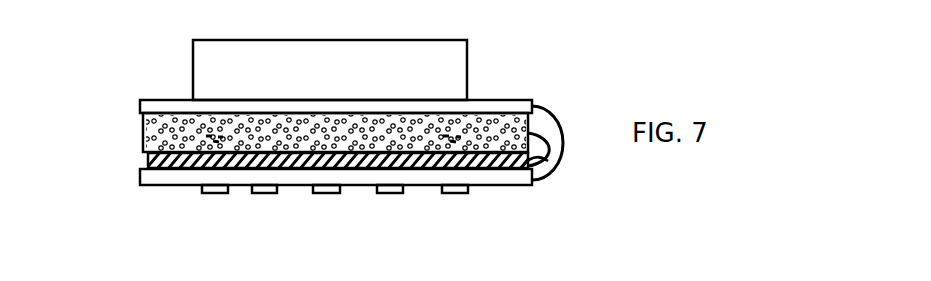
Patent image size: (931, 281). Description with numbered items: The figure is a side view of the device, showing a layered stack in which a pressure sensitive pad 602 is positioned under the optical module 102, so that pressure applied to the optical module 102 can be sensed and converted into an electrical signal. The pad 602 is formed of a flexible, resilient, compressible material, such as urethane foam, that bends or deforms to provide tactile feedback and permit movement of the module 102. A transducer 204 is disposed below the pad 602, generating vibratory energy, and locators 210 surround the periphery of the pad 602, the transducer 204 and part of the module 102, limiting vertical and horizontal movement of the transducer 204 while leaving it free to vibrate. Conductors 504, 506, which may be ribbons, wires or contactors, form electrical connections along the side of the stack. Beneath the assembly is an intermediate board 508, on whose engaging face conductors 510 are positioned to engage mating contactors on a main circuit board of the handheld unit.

The optical module 102 is at (168, 67).
The pressure sensitive pad 602 is at (166, 131).
The locators 210 is at (207, 141).
The transducer 204 is at (150, 160).
The intermediate board 508 is at (152, 176).
The conductors 510 is at (453, 194).
The conductor 506 is at (558, 110).
The conductor 504 is at (545, 136).